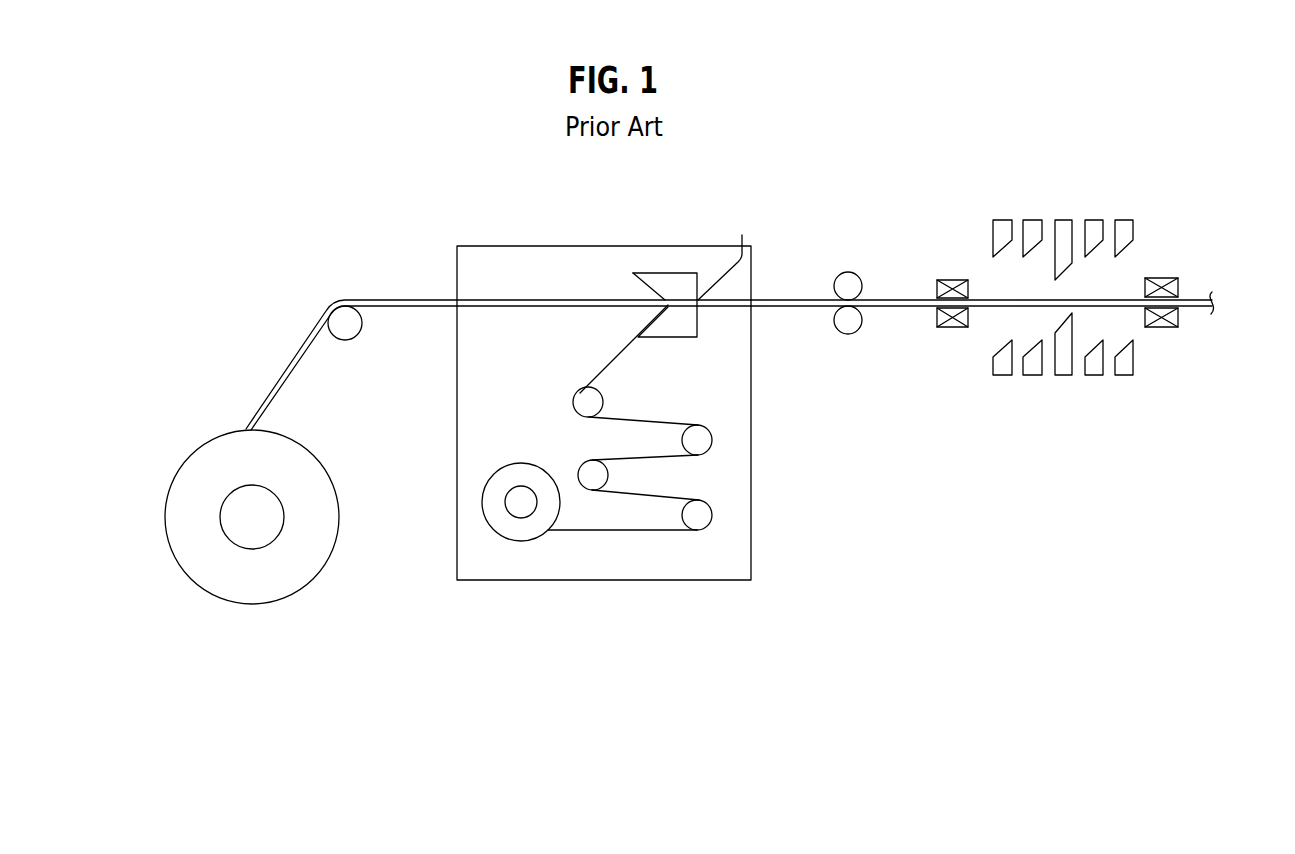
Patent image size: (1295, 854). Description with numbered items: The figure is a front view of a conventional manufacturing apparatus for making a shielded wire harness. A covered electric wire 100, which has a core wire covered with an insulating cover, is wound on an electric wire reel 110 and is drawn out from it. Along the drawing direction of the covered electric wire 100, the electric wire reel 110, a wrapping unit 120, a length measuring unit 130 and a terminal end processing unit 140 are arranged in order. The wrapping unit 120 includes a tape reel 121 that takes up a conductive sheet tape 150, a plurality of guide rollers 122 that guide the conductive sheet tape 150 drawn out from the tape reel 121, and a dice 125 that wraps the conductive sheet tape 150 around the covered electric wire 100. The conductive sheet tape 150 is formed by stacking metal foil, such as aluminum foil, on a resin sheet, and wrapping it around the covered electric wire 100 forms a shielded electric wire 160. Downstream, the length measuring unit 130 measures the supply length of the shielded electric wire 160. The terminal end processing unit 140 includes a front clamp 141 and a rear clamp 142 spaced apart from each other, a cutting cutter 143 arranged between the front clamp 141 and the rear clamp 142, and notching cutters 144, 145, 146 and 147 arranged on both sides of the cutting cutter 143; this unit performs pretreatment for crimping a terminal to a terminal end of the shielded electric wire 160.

The covered electric wire 100 is at (277, 388).
The electric wire reel 110 is at (297, 578).
The wrapping unit 120 is at (482, 580).
The tape reel 121 is at (518, 468).
The guide rollers 122 is at (598, 398).
The dice 125 is at (670, 280).
The length measuring unit 130 is at (848, 280).
The terminal end processing unit 140 is at (1080, 228).
The front clamp 141 is at (941, 330).
The rear clamp 142 is at (1162, 328).
The cutting cutter 143 is at (1058, 220).
The notching cutter 144 is at (998, 220).
The notching cutter 145 is at (1032, 220).
The notching cutter 146 is at (1088, 220).
The notching cutter 147 is at (1152, 269).
The conductive sheet tape 150 is at (630, 532).
The shielded electric wire 160 is at (791, 300).